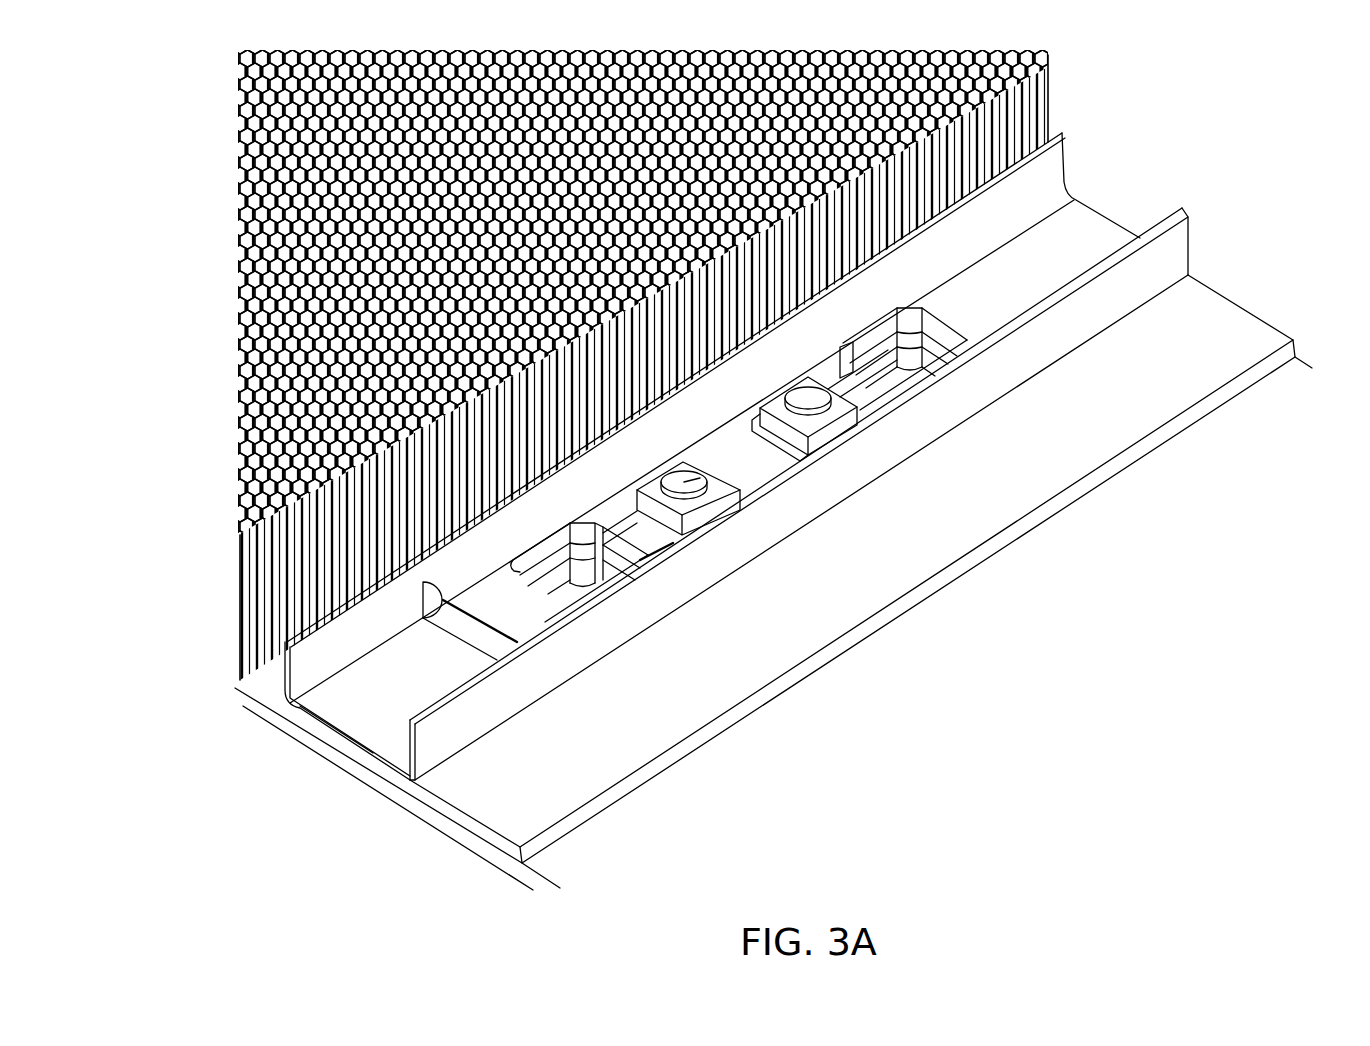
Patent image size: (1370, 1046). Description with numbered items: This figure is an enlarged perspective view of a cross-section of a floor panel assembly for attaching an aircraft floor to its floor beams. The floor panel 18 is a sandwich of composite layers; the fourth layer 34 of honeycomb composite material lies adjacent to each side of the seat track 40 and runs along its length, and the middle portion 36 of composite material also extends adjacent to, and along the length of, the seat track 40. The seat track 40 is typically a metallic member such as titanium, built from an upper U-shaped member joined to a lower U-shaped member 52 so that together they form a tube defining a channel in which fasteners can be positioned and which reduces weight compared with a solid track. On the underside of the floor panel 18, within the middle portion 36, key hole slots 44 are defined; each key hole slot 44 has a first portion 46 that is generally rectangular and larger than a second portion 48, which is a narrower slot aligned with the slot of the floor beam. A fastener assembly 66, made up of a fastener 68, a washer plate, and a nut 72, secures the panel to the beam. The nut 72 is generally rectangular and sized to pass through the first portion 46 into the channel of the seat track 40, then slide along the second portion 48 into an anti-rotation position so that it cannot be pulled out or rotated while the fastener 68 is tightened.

The floor panel 18 is at (487, 808).
The fourth layer of honeycomb composite material 34 is at (297, 230).
The middle portion 36 is at (680, 705).
The seat track 40 is at (290, 690).
The key hole slot 44 is at (558, 605).
The first portion 46 is at (577, 590).
The second portion 48 is at (645, 550).
The lower U-shaped member 52 is at (373, 718).
The fastener assembly 66 is at (877, 427).
The fastener 68 is at (713, 472).
The nut 72 is at (720, 495).